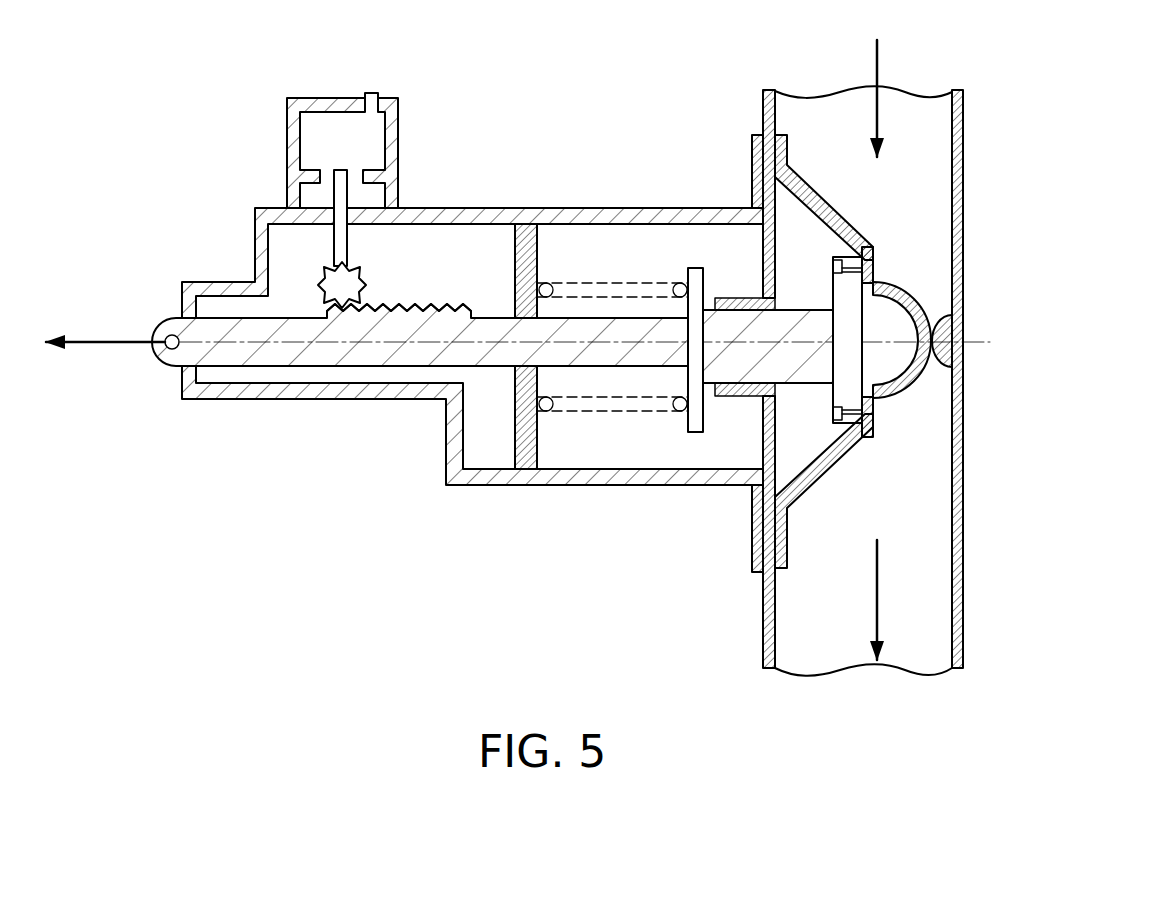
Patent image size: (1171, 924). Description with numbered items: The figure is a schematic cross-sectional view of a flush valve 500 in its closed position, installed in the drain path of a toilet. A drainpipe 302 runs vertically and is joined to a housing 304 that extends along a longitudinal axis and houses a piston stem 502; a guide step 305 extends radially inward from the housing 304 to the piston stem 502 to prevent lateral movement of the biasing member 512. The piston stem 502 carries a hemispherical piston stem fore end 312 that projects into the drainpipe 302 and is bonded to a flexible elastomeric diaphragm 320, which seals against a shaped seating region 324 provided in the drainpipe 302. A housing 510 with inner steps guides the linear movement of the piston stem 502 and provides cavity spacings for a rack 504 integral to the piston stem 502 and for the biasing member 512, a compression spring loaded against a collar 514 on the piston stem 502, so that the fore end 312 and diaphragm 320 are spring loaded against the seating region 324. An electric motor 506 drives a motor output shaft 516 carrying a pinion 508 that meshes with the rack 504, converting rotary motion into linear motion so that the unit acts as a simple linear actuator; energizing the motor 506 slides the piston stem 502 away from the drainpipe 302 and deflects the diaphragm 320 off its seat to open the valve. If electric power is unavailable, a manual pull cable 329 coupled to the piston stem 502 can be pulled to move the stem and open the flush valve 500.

The flush valve 500 is at (1090, 104).
The drainpipe 302 is at (965, 568).
The housing 304 is at (505, 213).
The guide step 305 is at (523, 427).
The piston stem fore end 312 is at (868, 335).
The diaphragm 320 is at (917, 306).
The seating region 324 is at (932, 348).
The manual pull cable 329 is at (147, 340).
The piston stem 502 is at (648, 345).
The rack 504 is at (443, 320).
The electric motor 506 is at (365, 152).
The pinion 508 is at (324, 272).
The housing 510 is at (262, 400).
The biasing member 512 is at (643, 400).
The collar 514 is at (701, 290).
The motor output shaft 516 is at (345, 215).